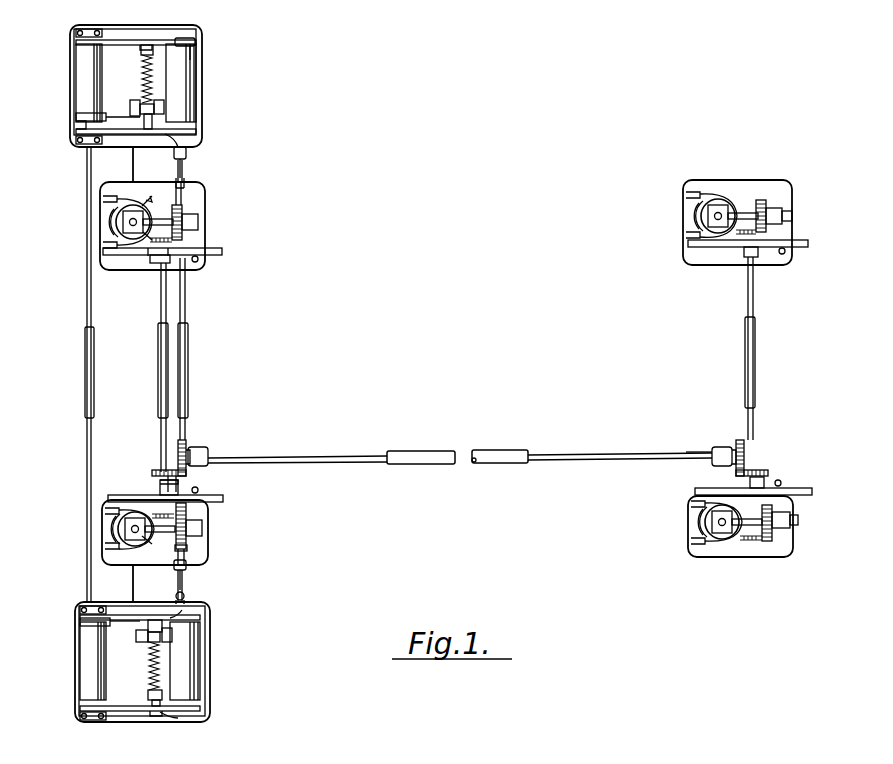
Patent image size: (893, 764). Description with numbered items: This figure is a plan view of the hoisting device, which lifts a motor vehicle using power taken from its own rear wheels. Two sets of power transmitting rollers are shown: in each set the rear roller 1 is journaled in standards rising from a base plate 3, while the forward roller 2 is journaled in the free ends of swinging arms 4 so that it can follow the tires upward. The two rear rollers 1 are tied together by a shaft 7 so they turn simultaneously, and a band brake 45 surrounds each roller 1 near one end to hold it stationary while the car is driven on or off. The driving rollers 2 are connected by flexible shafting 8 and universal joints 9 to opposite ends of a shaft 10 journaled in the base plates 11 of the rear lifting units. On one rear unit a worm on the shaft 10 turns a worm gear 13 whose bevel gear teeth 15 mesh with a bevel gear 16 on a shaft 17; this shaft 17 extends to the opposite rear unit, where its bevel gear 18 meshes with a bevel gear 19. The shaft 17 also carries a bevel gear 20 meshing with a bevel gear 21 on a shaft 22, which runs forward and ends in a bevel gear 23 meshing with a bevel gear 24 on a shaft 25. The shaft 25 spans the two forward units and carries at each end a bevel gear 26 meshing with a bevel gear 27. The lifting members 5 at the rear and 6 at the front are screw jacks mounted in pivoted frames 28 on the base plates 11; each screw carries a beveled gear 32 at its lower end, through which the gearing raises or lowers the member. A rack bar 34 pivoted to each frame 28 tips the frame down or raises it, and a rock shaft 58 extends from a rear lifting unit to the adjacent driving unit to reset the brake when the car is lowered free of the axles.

The rear roller 1 is at (85, 80).
The forward roller 2 is at (190, 108).
The base plate 3 is at (200, 70).
The swinging arms 4 is at (162, 46).
The band brake 45 is at (78, 126).
The universal joints 9 is at (198, 140).
The rock shaft 58 is at (133, 160).
The flexible shafting 8 is at (186, 178).
The pivoted frames 28 is at (115, 196).
The beveled gear 32 is at (115, 218).
The lifting members 5 is at (125, 226).
The bevel gear 19 is at (199, 222).
The base plates 11 is at (206, 242).
The bevel gear 18 is at (156, 250).
The rack bar 34 is at (210, 252).
The shaft 7 is at (86, 305).
The shaft 17 is at (160, 368).
The shaft 10 is at (186, 350).
The bevel gear 20 is at (156, 472).
The bevel gear 21 is at (186, 456).
The bevel gear 16 is at (162, 502).
The worm gear 13 is at (200, 522).
The bevel gear teeth 15 is at (178, 548).
The shaft 22 is at (346, 456).
The lifting members 6 is at (710, 219).
The bevel gear 27 is at (760, 206).
The bevel gear 26 is at (794, 240).
The shaft 25 is at (754, 366).
The bevel gear 23 is at (738, 446).
The bevel gear 24 is at (768, 474).